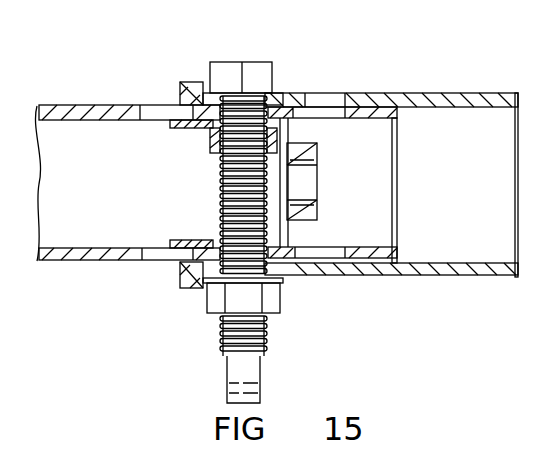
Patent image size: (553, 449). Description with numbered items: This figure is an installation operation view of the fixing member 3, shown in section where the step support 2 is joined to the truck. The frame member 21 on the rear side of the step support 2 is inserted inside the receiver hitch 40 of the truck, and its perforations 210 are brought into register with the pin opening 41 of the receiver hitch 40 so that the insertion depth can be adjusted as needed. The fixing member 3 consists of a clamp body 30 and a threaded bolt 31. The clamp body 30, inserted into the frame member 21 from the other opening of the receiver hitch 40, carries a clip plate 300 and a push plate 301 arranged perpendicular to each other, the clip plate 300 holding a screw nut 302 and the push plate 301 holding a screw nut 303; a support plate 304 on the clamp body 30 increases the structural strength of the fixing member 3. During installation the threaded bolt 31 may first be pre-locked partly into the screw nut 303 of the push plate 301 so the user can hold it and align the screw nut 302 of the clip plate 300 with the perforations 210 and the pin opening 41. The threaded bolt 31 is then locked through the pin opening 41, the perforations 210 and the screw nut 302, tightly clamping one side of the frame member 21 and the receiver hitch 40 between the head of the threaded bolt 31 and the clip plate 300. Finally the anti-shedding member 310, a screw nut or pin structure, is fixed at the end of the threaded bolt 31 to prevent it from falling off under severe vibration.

The step support 2 is at (62, 105).
The frame member 21 is at (110, 110).
The perforations 210 is at (216, 100).
The fixing member 3 is at (332, 139).
The clamp body 30 is at (295, 93).
The clip plate 300 is at (172, 125).
The push plate 301 is at (290, 227).
The screw nut 302 is at (210, 140).
The screw nut 303 is at (317, 155).
The support plate 304 is at (173, 238).
The threaded bolt 31 is at (230, 72).
The anti-shedding member 310 is at (270, 305).
The receiver hitch 40 is at (457, 92).
The pin opening 41 is at (268, 92).